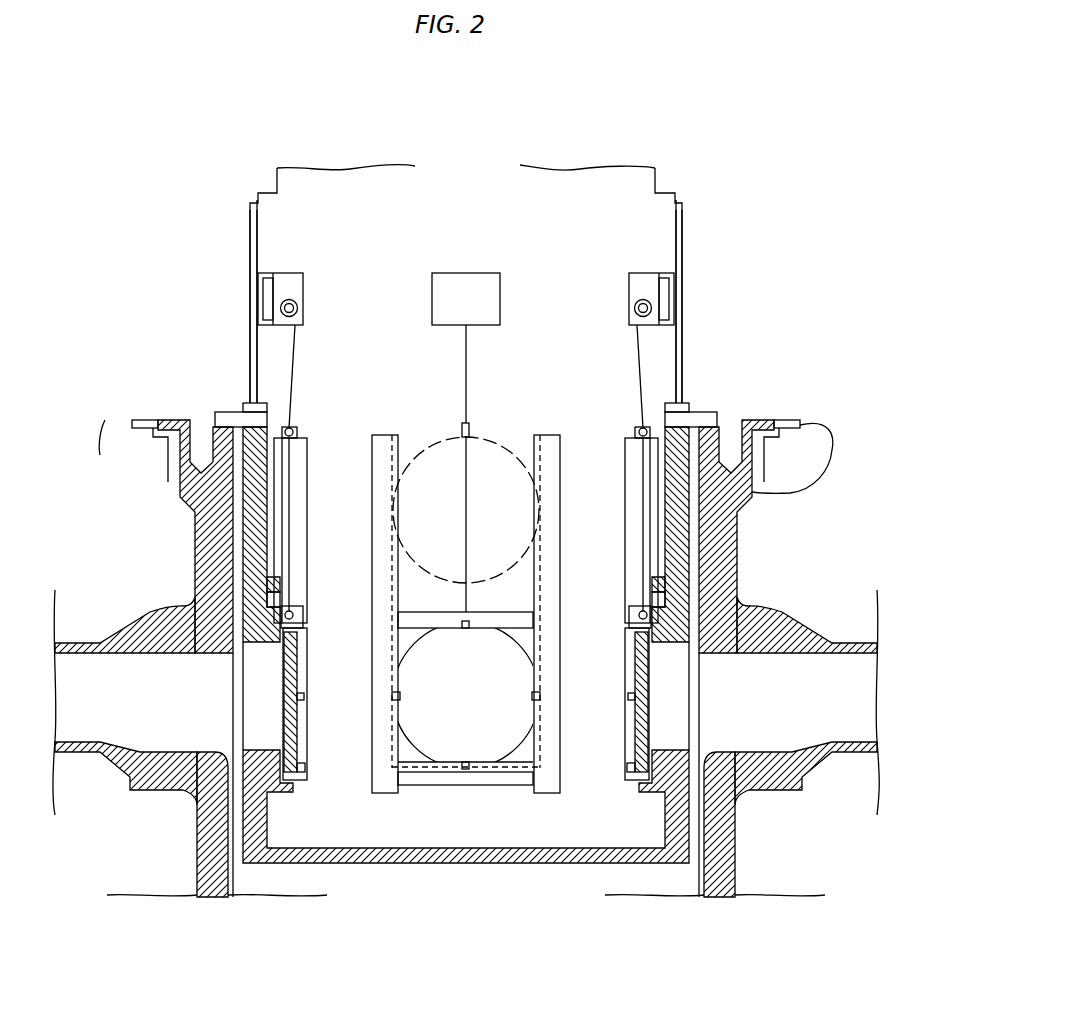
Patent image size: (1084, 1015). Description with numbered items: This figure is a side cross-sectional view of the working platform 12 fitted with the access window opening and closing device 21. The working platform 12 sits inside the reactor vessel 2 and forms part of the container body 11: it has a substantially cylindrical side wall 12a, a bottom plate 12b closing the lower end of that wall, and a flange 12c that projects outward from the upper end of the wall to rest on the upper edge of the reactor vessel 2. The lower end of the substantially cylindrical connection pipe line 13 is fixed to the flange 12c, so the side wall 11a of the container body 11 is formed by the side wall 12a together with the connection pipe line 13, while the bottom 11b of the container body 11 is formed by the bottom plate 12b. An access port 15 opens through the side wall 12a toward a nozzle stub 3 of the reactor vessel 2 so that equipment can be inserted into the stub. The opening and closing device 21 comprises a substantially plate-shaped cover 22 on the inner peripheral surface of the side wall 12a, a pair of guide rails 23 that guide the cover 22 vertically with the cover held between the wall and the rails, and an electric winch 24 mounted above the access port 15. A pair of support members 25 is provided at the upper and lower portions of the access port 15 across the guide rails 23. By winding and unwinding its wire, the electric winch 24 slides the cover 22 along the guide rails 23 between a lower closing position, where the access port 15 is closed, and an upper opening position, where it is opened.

The reactor vessel 2 is at (831, 450).
The nozzle stub 3 is at (143, 628).
The container body 11 is at (683, 226).
The side wall of the container body 11a is at (562, 409).
The bottom of the container body 11b is at (572, 594).
The working platform 12 is at (685, 530).
The side wall 12a is at (728, 468).
The bottom plate 12b is at (290, 864).
The flange 12c is at (701, 408).
The connection pipe line 13 is at (683, 245).
The access port 15 is at (262, 645).
The opening and closing device 21 is at (300, 258).
The cover 22 is at (600, 646).
The guide rails 23 is at (626, 473).
The electric winch 24 is at (500, 290).
The support members 25 is at (492, 618).